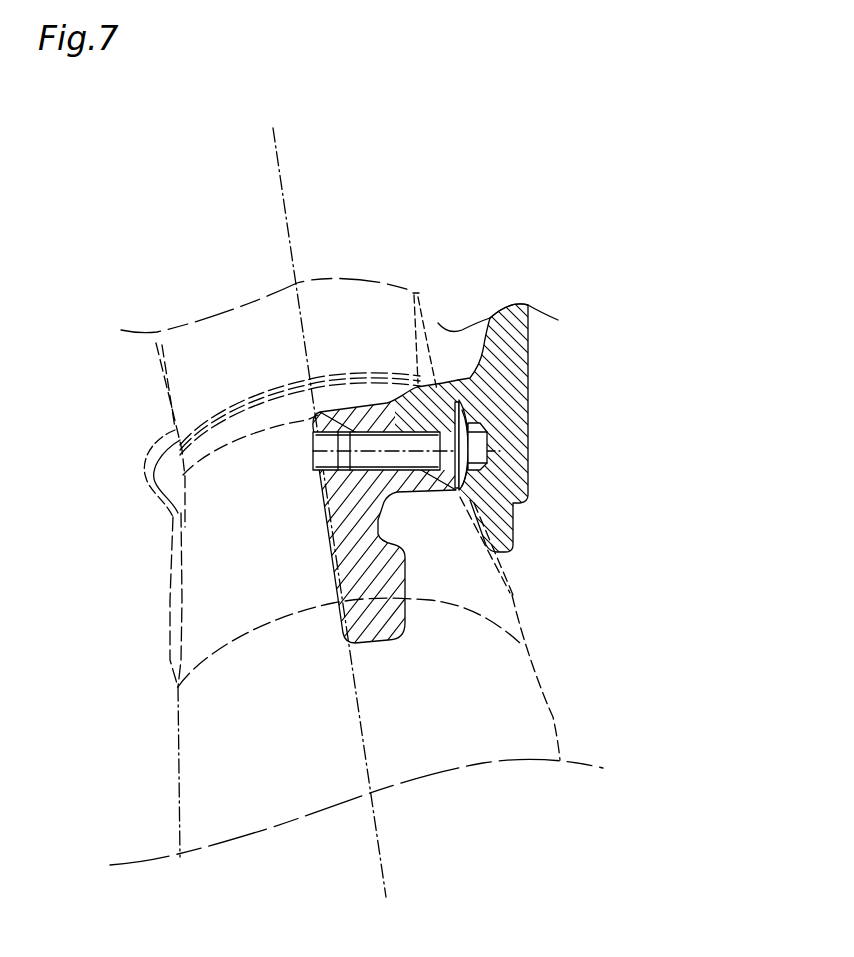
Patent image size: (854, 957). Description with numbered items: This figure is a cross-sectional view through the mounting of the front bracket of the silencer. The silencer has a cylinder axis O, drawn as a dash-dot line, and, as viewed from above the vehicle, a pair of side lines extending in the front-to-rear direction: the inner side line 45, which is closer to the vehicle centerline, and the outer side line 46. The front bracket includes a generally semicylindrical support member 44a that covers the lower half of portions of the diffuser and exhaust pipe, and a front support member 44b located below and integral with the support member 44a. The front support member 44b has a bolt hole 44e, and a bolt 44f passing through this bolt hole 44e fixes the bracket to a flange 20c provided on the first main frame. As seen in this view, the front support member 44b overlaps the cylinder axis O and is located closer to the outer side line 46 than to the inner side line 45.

The cylinder axis O is at (188, 128).
The flange 20c is at (528, 388).
The support member 44a is at (145, 466).
The front support member 44b is at (388, 594).
The bolt hole 44e is at (353, 432).
The bolt 44f is at (490, 447).
The inner side line 45 is at (178, 775).
The outer side line 46 is at (553, 712).